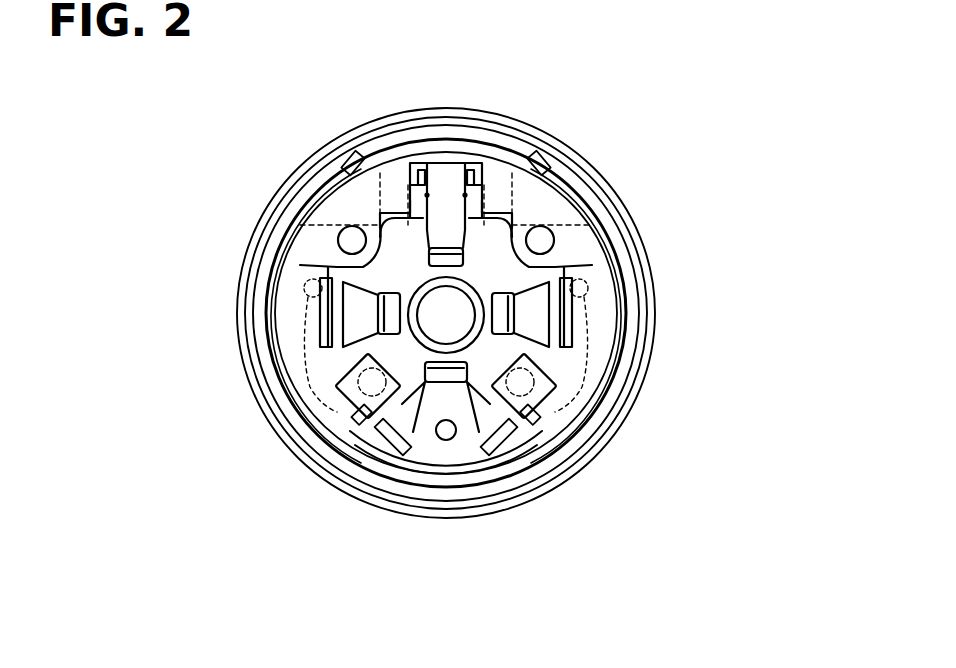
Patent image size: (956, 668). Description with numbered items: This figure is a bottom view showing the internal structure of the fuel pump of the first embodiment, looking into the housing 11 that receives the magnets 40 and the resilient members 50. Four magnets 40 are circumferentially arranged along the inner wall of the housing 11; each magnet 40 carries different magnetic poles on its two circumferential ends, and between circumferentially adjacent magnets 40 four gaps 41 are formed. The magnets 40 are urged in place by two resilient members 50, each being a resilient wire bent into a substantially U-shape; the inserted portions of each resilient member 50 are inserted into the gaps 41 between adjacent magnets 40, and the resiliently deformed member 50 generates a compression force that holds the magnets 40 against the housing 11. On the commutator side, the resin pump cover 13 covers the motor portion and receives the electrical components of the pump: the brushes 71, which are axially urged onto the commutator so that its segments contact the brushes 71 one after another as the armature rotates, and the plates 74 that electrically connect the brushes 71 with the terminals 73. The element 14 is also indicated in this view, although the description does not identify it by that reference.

The housing 11 is at (541, 120).
The pump cover 13 is at (440, 455).
The pole piece 14 is at (445, 256).
The magnet 40 is at (372, 147).
The gap 41 is at (345, 150).
The resilient member 50 is at (302, 163).
The brush 71 is at (383, 445).
The terminal 73 is at (420, 165).
The plate 74 is at (322, 250).